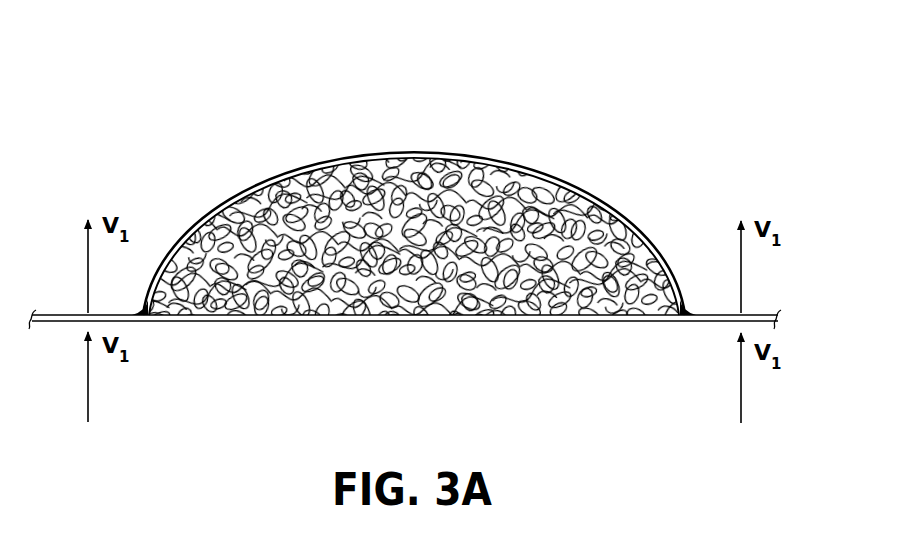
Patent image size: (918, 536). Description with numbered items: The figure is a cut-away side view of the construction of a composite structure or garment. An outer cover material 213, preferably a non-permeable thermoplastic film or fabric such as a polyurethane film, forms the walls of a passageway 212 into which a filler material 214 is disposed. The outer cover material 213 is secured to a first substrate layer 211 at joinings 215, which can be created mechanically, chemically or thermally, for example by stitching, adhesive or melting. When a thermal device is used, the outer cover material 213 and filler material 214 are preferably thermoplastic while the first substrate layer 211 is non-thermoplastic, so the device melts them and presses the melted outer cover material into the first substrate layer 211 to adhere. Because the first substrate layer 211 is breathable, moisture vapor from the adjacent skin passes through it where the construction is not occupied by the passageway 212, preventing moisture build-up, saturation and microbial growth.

The first substrate layer 211 is at (487, 322).
The passageway 212 is at (609, 197).
The outer cover material 213 is at (485, 155).
The filler material 214 is at (273, 198).
The joinings 215 is at (144, 320).